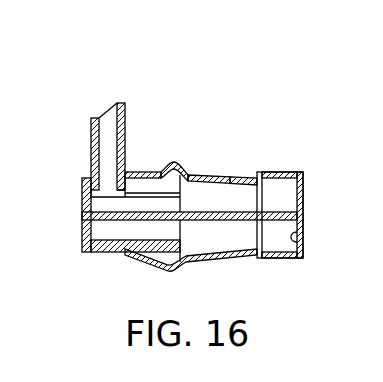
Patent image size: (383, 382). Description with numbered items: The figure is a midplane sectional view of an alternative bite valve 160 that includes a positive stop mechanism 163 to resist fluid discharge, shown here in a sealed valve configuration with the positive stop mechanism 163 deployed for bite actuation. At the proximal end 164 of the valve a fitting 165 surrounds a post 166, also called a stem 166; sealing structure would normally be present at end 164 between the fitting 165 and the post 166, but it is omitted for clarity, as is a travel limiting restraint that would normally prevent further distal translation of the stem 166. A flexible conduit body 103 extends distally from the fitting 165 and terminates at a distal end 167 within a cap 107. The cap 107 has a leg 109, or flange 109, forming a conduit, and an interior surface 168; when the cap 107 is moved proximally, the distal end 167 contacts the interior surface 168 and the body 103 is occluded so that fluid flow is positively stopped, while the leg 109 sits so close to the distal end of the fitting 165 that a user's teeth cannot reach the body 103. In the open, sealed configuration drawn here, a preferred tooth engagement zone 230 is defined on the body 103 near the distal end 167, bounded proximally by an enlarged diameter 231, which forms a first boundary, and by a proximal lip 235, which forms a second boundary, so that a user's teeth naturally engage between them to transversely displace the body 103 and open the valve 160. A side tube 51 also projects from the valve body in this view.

The side port tube 51 is at (104, 118).
The body 103 is at (208, 174).
The cap 107 is at (304, 200).
The leg 109 is at (259, 255).
The valve 160 is at (238, 105).
The positive stop mechanism 163 is at (272, 160).
The end 164 is at (58, 182).
The fitting 165 is at (86, 252).
The post 166 is at (112, 222).
The distal end 167 is at (308, 184).
The interior surface 168 is at (300, 240).
The tooth engagement zone 230 is at (238, 258).
The enlarged diameter 231 is at (174, 155).
The proximal lip 235 is at (240, 173).